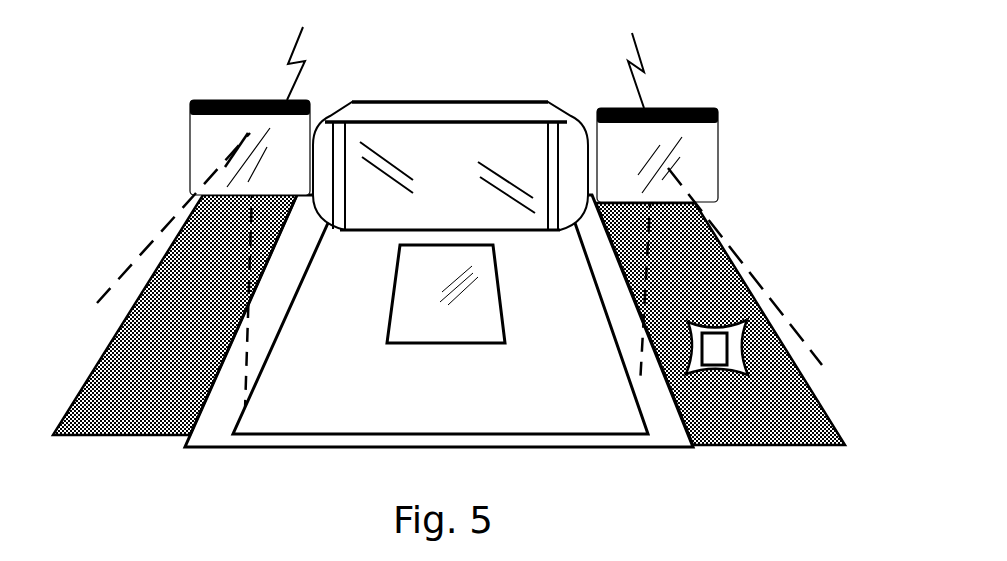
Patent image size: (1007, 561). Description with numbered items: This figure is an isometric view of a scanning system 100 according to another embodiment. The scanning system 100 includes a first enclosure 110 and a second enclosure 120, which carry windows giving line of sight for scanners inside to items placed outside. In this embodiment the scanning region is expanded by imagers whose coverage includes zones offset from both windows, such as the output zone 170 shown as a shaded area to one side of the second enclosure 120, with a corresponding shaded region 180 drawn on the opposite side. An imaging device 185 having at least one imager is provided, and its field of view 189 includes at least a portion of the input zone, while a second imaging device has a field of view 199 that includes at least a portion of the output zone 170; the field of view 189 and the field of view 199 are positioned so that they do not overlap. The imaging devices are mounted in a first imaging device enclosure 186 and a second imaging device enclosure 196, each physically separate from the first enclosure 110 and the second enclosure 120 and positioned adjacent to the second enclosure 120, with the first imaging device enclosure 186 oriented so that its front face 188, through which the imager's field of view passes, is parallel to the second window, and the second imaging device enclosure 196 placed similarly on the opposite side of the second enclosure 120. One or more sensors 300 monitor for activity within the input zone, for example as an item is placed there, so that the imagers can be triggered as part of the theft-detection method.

The scanning system 100 is at (335, 408).
The first enclosure 110 is at (613, 440).
The second enclosure 120 is at (425, 110).
The output zone 170 is at (146, 316).
The right projection region 180 is at (750, 257).
The imaging device 185 is at (467, 59).
The first imaging device enclosure 186 is at (668, 115).
The front face 188 is at (708, 153).
The field of view 189 is at (772, 297).
The second imaging device enclosure 196 is at (222, 107).
The field of view 199 is at (182, 214).
The sensors 300 is at (727, 372).